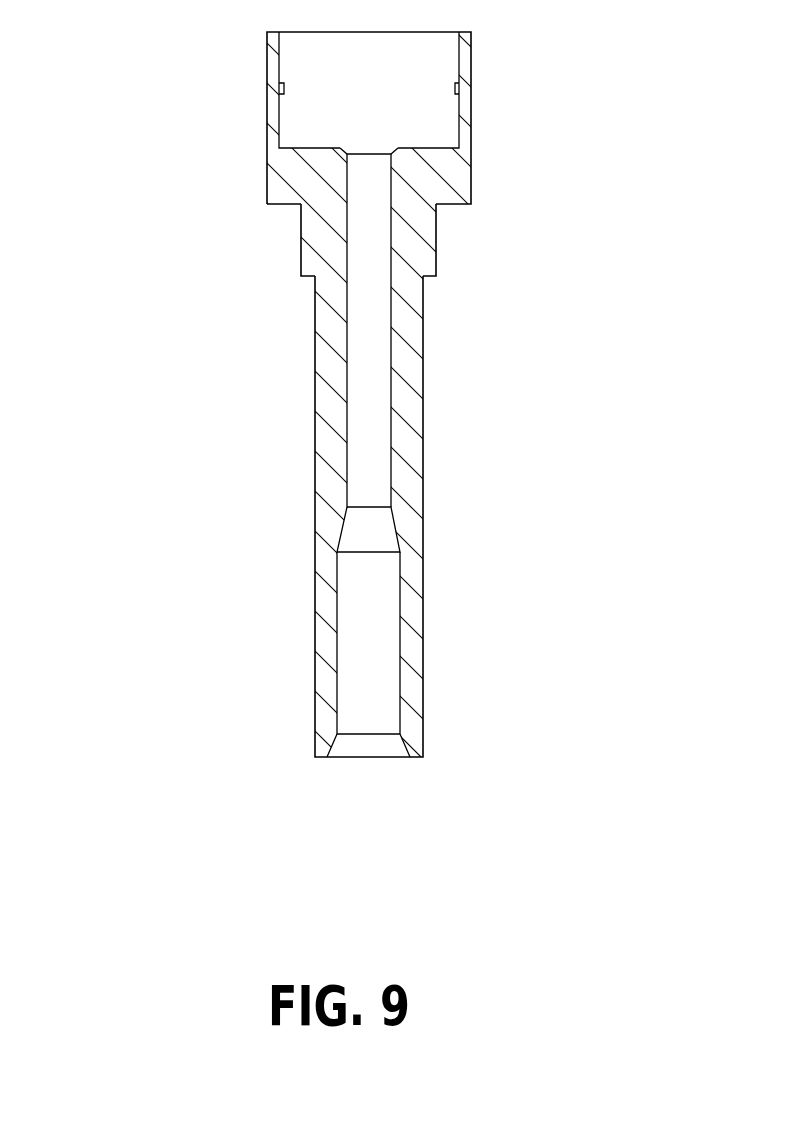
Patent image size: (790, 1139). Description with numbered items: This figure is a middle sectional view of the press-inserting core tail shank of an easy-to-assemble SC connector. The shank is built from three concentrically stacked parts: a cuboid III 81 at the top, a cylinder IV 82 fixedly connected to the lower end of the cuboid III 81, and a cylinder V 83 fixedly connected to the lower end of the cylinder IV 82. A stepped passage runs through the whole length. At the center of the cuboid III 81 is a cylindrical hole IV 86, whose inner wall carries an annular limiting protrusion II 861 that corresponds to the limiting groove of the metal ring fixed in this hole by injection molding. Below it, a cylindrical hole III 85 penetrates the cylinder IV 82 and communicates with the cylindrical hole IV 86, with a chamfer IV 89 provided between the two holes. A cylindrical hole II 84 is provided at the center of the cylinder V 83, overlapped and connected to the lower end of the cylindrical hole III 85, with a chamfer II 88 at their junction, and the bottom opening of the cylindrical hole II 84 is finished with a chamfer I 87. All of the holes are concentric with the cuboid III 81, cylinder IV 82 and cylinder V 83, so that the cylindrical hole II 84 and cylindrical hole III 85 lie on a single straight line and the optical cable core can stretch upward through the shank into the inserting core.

The cuboid III 81 is at (455, 177).
The cylinder IV 82 is at (425, 258).
The cylinder V 83 is at (417, 418).
The cylindrical hole II 84 is at (372, 667).
The cylindrical hole III 85 is at (365, 380).
The cylindrical hole IV 86 is at (338, 94).
The annular limiting protrusion II 861 is at (279, 90).
The chamfer I 87 is at (368, 747).
The chamfer II 88 is at (370, 527).
The chamfer IV 89 is at (375, 153).